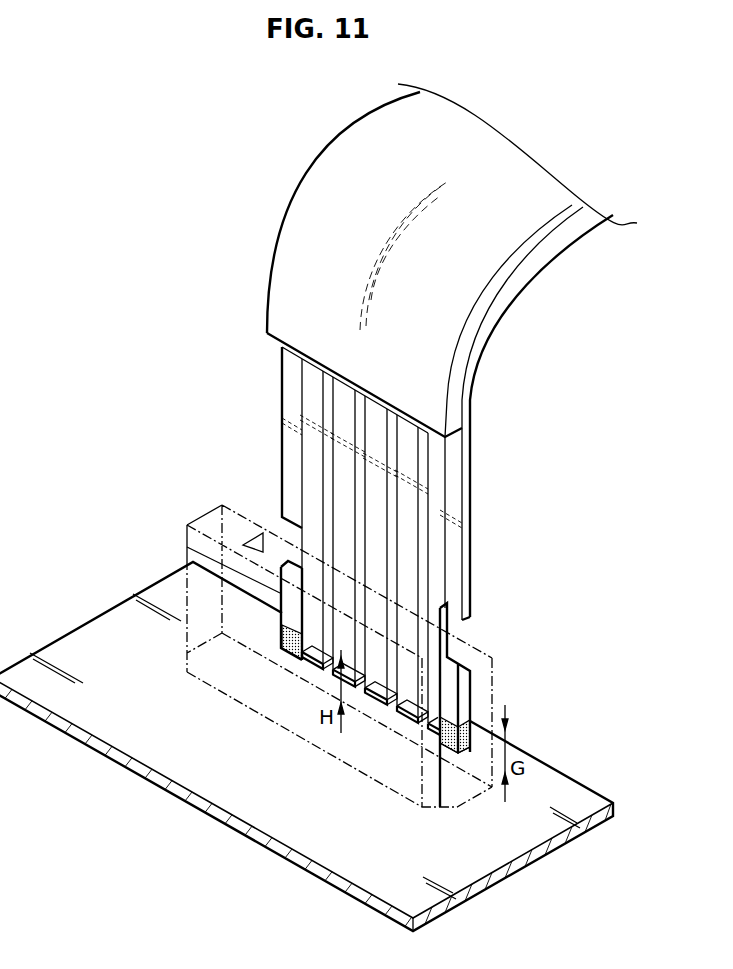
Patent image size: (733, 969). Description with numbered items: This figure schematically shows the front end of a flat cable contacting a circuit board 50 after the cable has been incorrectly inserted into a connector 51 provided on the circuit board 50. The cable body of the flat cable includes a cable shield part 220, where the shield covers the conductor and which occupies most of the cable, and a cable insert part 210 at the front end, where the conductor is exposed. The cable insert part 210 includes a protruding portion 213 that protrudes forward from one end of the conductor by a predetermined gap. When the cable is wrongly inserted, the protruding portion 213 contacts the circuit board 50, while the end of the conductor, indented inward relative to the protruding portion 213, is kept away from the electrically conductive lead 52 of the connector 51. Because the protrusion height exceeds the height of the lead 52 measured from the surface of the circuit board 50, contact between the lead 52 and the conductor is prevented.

The circuit board 50 is at (80, 633).
The connector 51 is at (205, 512).
The lead 52 is at (412, 712).
The cable insert part 210 is at (488, 549).
The protruding portion 213 is at (281, 648).
The cable shield part 220 is at (518, 304).